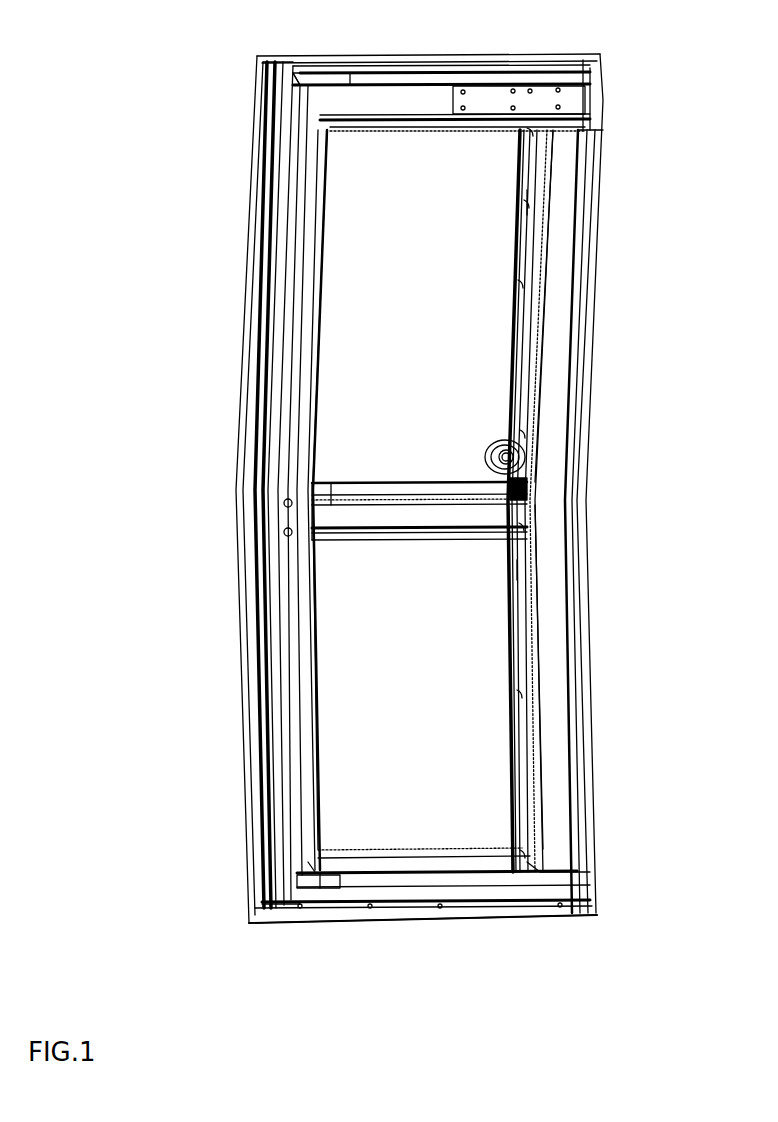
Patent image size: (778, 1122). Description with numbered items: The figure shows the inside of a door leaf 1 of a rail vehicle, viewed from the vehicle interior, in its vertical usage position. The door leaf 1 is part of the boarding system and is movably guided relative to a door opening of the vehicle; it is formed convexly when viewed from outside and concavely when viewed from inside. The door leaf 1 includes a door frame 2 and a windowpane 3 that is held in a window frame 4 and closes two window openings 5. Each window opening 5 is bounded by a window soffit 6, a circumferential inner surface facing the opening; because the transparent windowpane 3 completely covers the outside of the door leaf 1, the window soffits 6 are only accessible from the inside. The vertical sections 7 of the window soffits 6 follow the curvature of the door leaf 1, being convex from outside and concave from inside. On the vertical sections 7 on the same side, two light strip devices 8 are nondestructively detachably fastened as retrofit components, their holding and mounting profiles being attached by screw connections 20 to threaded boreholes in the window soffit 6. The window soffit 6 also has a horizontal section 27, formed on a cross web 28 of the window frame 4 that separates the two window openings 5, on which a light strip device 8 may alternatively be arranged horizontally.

The door leaf 1 is at (483, 461).
The door frame 2 is at (555, 767).
The windowpane 3 is at (370, 380).
The window frame 4 is at (313, 165).
The window openings 5 is at (378, 300).
The window soffit 6 is at (456, 120).
The vertical sections 7 is at (530, 358).
The light strip devices 8 is at (523, 203).
The screw connections 20 is at (540, 130).
The horizontal section 27 is at (433, 495).
The cross web 28 is at (453, 515).